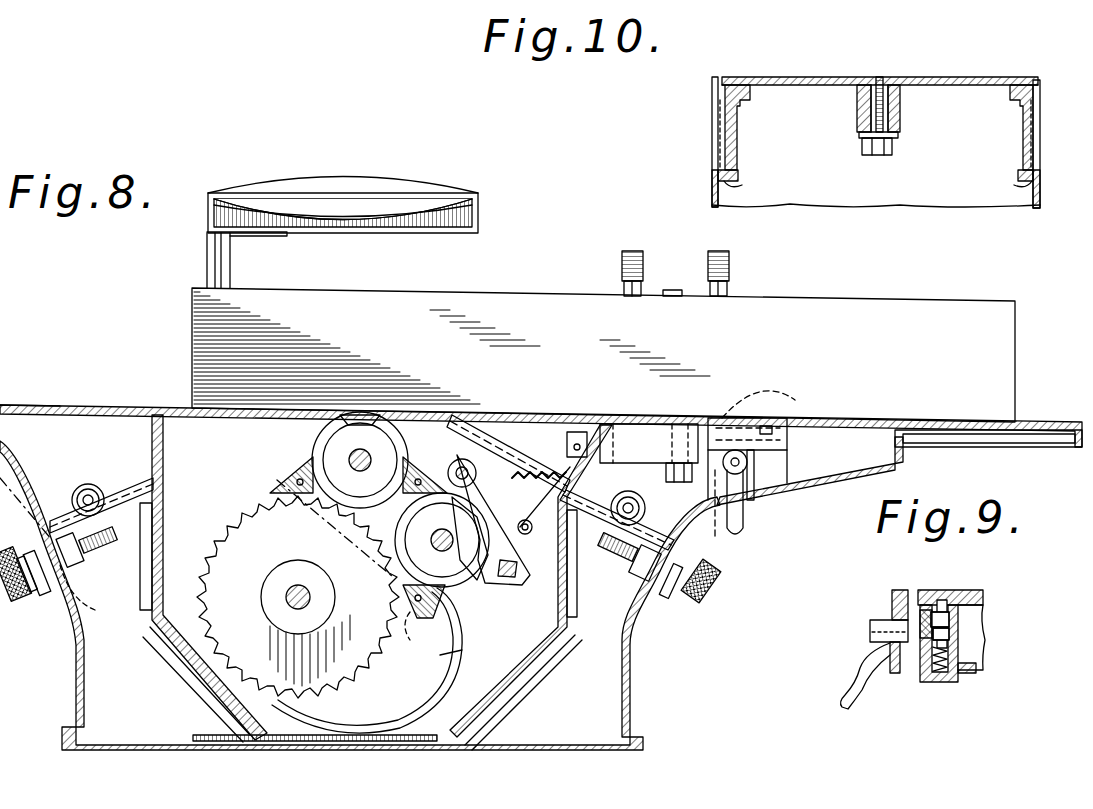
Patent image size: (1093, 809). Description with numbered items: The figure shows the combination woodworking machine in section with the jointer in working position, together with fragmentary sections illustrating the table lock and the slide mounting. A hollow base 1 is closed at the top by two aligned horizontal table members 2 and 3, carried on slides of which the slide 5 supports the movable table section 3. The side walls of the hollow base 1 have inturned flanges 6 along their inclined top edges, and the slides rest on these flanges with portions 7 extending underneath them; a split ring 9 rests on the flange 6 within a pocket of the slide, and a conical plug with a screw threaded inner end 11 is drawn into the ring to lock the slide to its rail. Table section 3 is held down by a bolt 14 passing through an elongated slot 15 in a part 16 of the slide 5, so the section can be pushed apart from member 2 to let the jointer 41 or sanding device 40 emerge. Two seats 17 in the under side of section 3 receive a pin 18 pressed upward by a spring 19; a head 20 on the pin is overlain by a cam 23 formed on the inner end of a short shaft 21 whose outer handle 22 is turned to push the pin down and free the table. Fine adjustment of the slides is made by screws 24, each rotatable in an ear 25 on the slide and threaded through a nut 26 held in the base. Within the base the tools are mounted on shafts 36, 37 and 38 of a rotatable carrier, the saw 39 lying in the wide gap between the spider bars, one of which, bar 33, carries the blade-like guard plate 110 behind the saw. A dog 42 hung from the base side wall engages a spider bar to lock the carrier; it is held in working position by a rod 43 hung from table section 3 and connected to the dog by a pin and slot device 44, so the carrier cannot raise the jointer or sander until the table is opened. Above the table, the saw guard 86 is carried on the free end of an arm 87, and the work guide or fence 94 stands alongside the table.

In FIG. 8, the hollow base 1 is at (632, 690).
In FIG. 10, the hollow base 1 is at (712, 193).
In FIG. 8, the table member 2 is at (48, 405).
In FIG. 8, the table section 3 is at (920, 421).
In FIG. 10, the table section 3 is at (940, 77).
In FIG. 9, the table section 3 is at (972, 590).
In FIG. 8, the slide 5 is at (815, 478).
In FIG. 10, the slide 5 is at (740, 130).
In FIG. 9, the slide 5 is at (984, 652).
In FIG. 10, the inturned flange 6 is at (720, 172).
In FIG. 10, the slide portion 7 is at (745, 187).
In FIG. 8, the split ring 9 is at (735, 395).
In FIG. 8, the screw threaded inner end 11 is at (94, 492).
In FIG. 8, the bolt 14 is at (678, 484).
In FIG. 10, the bolt 14 is at (873, 118).
In FIG. 10, the slot 15 is at (890, 120).
In FIG. 8, the slide part 16 is at (649, 443).
In FIG. 10, the slide part 16 is at (898, 128).
In FIG. 8, the seat or depression 17 is at (743, 418).
In FIG. 9, the seat or depression 17 is at (943, 600).
In FIG. 9, the pin 18 is at (960, 618).
In FIG. 9, the spring 19 is at (940, 668).
In FIG. 9, the head 20 is at (960, 633).
In FIG. 8, the short shaft 21 is at (745, 470).
In FIG. 9, the short shaft 21 is at (884, 625).
In FIG. 8, the handle 22 is at (745, 520).
In FIG. 9, the handle 22 is at (840, 690).
In FIG. 9, the cam 23 is at (926, 603).
In FIG. 8, the screw 24 is at (118, 535).
In FIG. 8, the ear 25 is at (46, 590).
In FIG. 8, the nut 26 is at (80, 473).
In FIG. 8, the spider bar 33 is at (428, 628).
In FIG. 8, the shaft 36 is at (288, 590).
In FIG. 8, the shaft 37 is at (442, 540).
In FIG. 8, the shaft 38 is at (358, 460).
In FIG. 8, the saw 39 is at (298, 589).
In FIG. 8, the sanding device 40 is at (440, 546).
In FIG. 8, the jointer 41 is at (357, 473).
In FIG. 8, the dog 42 is at (505, 580).
In FIG. 8, the rod or bar 43 is at (555, 465).
In FIG. 8, the pin and slot device 44 is at (528, 540).
In FIG. 8, the saw guard 86 is at (400, 193).
In FIG. 8, the arm 87 is at (232, 265).
In FIG. 8, the work guide or fence 94 is at (830, 318).
In FIG. 8, the guard plate 110 is at (445, 655).